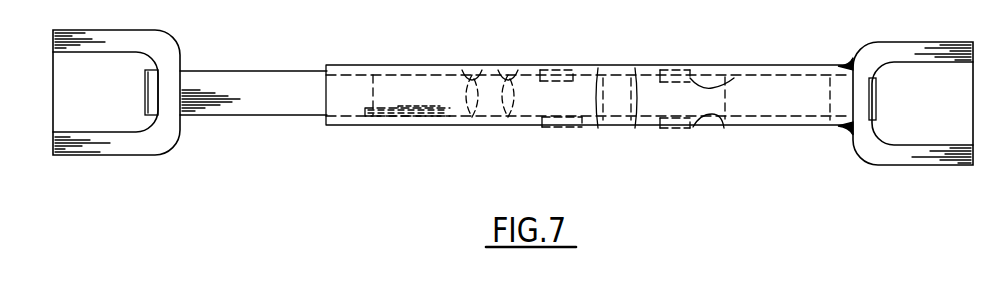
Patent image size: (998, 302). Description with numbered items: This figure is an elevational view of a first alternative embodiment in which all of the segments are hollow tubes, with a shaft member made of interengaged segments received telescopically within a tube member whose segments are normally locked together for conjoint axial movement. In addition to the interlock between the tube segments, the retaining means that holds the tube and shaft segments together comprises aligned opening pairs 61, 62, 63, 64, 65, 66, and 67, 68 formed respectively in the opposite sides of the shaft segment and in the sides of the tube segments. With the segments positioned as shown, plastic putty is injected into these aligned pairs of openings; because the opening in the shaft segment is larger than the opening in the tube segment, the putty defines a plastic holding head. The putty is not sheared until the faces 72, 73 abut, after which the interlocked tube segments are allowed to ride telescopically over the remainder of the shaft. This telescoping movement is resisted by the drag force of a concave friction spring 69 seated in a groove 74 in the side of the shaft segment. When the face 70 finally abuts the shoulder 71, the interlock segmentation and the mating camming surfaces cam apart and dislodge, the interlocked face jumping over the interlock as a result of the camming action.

The aligned opening 61 is at (576, 80).
The aligned opening 62 is at (568, 71).
The aligned opening 63 is at (578, 121).
The aligned opening 64 is at (550, 122).
The aligned opening 65 is at (722, 80).
The aligned opening 66 is at (688, 38).
The aligned opening 67 is at (700, 116).
The aligned opening 68 is at (684, 124).
The concave friction spring 69 is at (402, 110).
The face 70 is at (327, 66).
The shoulder 71 is at (178, 46).
The face 72 is at (508, 82).
The face 73 is at (464, 78).
The groove 74 is at (403, 108).